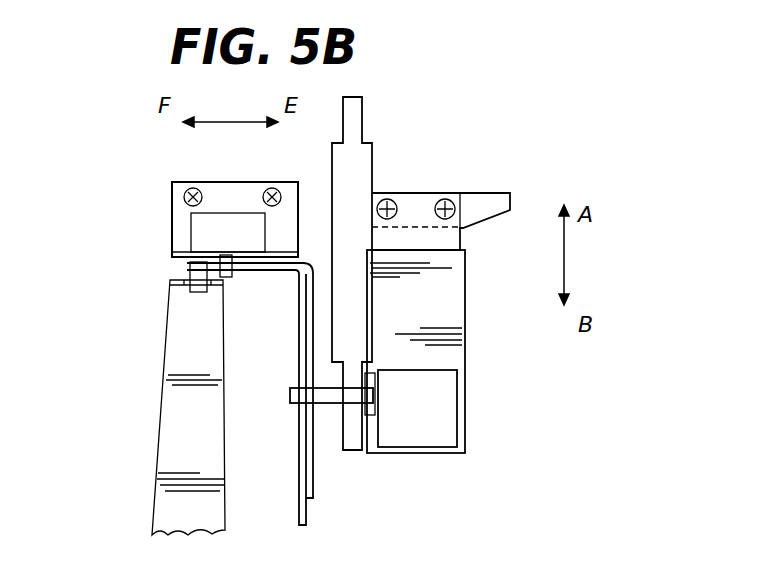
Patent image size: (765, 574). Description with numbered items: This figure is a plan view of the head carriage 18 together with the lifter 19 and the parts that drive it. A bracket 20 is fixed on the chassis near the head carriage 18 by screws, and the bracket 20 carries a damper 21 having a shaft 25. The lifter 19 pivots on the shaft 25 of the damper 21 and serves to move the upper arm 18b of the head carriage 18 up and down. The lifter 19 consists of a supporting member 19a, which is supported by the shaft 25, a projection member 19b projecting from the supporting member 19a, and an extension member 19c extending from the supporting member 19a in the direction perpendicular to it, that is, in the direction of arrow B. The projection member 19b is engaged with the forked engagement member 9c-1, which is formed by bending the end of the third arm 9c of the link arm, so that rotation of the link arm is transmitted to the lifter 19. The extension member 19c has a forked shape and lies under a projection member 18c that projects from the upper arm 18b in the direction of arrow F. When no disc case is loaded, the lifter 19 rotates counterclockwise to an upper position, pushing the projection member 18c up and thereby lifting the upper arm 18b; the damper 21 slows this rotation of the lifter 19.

The head carriage 18 is at (390, 275).
The upper arm 18b is at (447, 358).
The projection member 18c is at (293, 395).
The lifter 19 is at (250, 394).
The supporting member 19a is at (260, 272).
The projection member 19b is at (190, 272).
The extension member 19c is at (298, 428).
The bracket 20 is at (250, 198).
The damper 21 is at (257, 232).
The shaft 25 is at (222, 296).
The third arm 9c is at (150, 407).
The engagement member 9c-1 is at (183, 285).